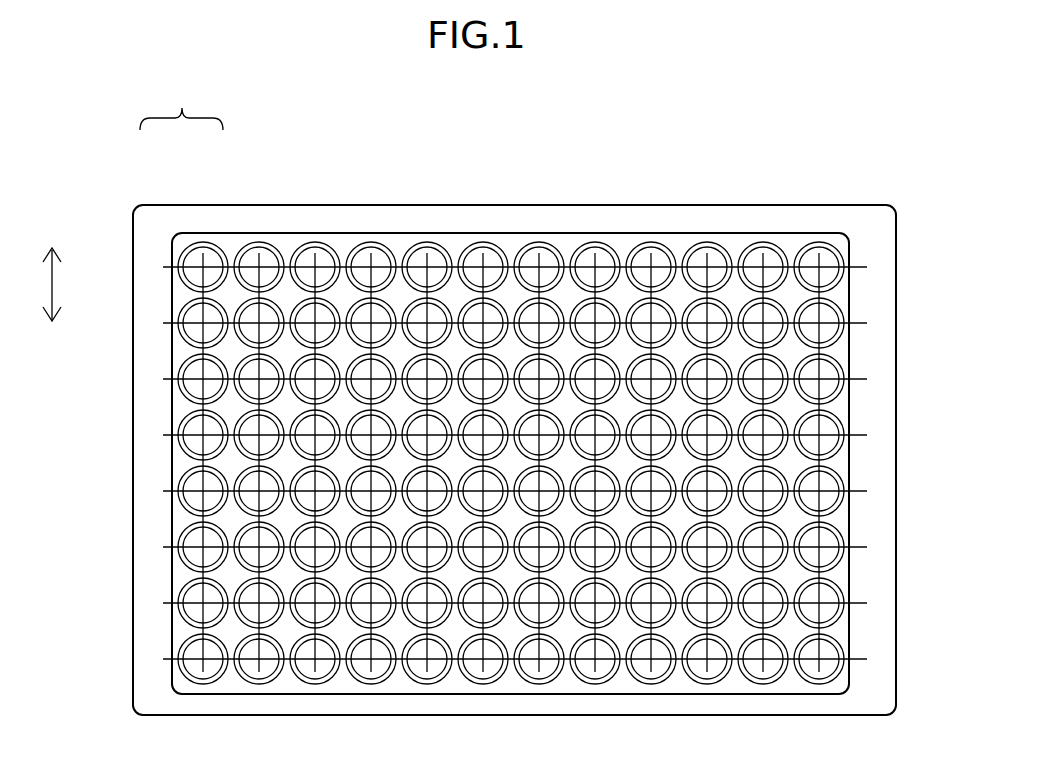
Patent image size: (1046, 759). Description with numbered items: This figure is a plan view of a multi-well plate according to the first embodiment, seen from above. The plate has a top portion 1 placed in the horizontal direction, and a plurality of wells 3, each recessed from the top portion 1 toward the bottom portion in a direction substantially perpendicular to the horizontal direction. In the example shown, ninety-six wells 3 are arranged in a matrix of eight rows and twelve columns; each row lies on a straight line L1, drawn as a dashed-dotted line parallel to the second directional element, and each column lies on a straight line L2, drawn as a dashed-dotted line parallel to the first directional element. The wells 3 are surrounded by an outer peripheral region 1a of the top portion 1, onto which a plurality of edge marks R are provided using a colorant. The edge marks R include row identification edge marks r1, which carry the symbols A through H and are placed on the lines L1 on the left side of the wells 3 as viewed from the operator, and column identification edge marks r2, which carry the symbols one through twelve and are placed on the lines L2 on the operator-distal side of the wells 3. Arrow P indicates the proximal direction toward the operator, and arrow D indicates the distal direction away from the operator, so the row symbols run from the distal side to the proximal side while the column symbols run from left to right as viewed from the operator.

The top portion 1 is at (507, 414).
The outer peripheral region 1a is at (147, 409).
The well 3 is at (558, 249).
The straight line L1 is at (850, 268).
The straight line L2 is at (820, 668).
The edge mark R is at (181, 99).
The row identification edge mark r1 is at (152, 256).
The column identification edge mark r2 is at (205, 217).
The arrow D is at (53, 265).
The arrow P is at (51, 335).